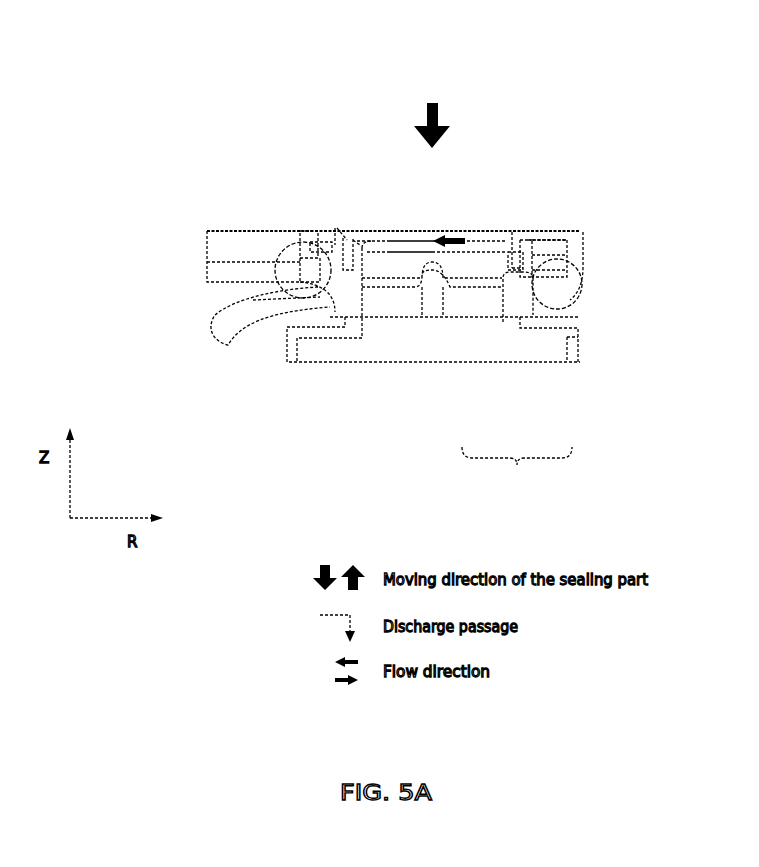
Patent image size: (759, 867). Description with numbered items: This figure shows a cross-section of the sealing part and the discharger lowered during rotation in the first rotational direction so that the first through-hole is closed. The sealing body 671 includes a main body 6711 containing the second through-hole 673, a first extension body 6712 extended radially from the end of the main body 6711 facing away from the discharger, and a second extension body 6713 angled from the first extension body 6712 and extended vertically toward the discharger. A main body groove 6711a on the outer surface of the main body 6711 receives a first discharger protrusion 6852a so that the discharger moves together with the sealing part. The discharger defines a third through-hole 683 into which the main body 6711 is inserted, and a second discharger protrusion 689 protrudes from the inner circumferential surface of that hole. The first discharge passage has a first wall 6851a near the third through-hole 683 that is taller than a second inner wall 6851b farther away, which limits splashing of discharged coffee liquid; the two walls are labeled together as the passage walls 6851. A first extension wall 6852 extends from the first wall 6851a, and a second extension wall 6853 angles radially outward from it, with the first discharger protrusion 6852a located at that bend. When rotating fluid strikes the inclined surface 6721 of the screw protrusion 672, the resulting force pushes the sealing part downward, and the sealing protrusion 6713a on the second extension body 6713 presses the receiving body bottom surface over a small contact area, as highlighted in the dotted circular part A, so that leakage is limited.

The sealing body 671 is at (692, 222).
The main body 6711 is at (583, 232).
The main body groove 6711a is at (513, 250).
The first extension body 6712 is at (575, 240).
The second extension body 6713 is at (577, 267).
The sealing protrusion 6713a is at (578, 283).
The screw protrusion 672 is at (483, 243).
The inclined surface 6721 is at (490, 263).
The second through-hole 673 is at (512, 228).
The third through-hole 683 is at (483, 300).
The second discharger protrusion 689 is at (427, 305).
The seal ring assembly 6851 is at (517, 474).
The first wall 6851a is at (520, 303).
The second inner wall 6851b is at (588, 297).
The first extension wall 6852 is at (333, 230).
The first discharger protrusion 6852a is at (368, 230).
The second extension wall 6853 is at (302, 242).
The dotted circular part A is at (285, 255).